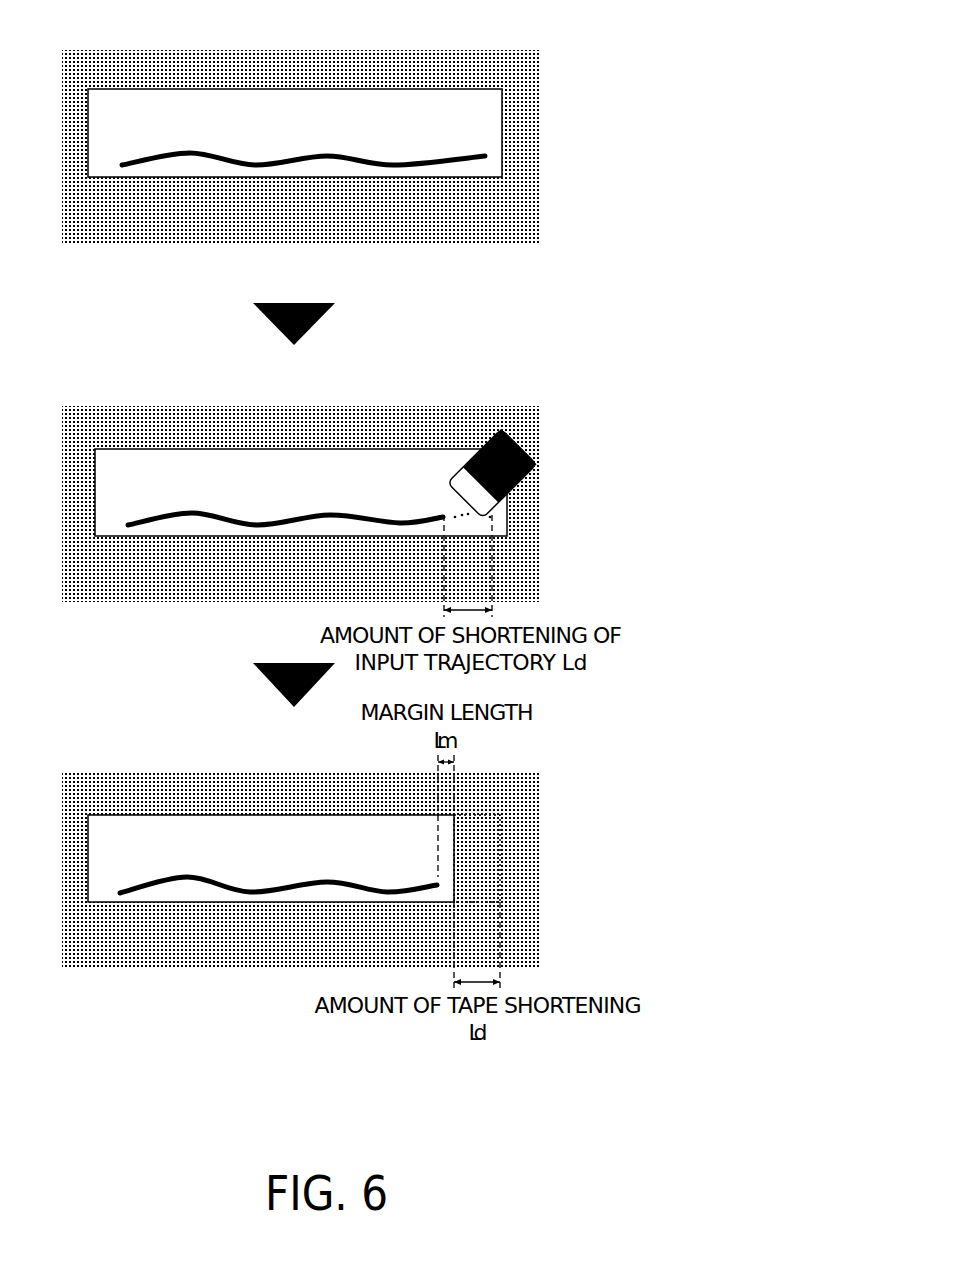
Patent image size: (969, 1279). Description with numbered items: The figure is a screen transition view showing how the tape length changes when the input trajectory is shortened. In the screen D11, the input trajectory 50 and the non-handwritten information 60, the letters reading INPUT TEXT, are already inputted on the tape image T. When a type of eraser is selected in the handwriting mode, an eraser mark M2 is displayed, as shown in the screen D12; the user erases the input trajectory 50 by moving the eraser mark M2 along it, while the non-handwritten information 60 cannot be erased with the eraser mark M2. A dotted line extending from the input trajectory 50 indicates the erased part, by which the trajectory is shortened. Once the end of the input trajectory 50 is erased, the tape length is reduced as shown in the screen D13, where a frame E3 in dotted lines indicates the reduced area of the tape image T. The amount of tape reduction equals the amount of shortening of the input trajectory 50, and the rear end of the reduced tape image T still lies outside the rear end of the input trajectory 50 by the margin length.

The non-handwritten information 60 is at (221, 92).
The input trajectory 50 is at (289, 186).
The tape image T is at (205, 178).
The screen D11 is at (540, 137).
The screen D12 is at (543, 497).
The screen D13 is at (540, 862).
The eraser mark M2 is at (520, 438).
The frame E3 is at (503, 833).